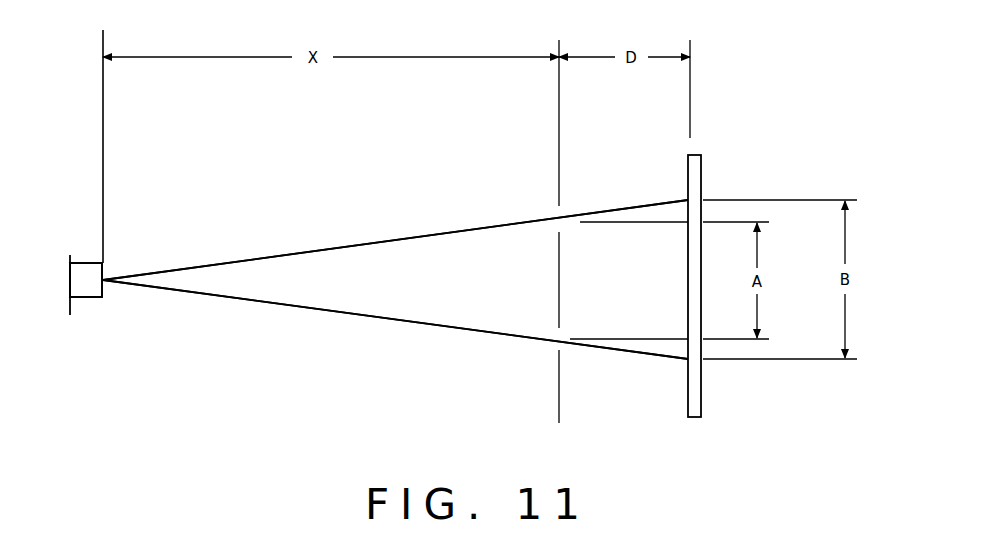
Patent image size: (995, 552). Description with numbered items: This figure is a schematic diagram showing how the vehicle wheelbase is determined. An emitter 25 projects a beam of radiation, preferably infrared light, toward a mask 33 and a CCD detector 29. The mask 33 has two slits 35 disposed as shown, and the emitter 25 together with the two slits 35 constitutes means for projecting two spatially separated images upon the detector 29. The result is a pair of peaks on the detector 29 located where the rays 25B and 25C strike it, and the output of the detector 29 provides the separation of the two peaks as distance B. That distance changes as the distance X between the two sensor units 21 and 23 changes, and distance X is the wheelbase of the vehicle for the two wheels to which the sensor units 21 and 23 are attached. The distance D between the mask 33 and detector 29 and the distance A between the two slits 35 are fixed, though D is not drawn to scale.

The sensor unit 21 is at (88, 238).
The sensor unit 23 is at (540, 198).
The emitter 25 is at (101, 305).
The ray 25B is at (636, 205).
The ray 25C is at (605, 352).
The CCD detector 29 is at (702, 400).
The mask 33 is at (557, 412).
The slits 35 is at (550, 227).